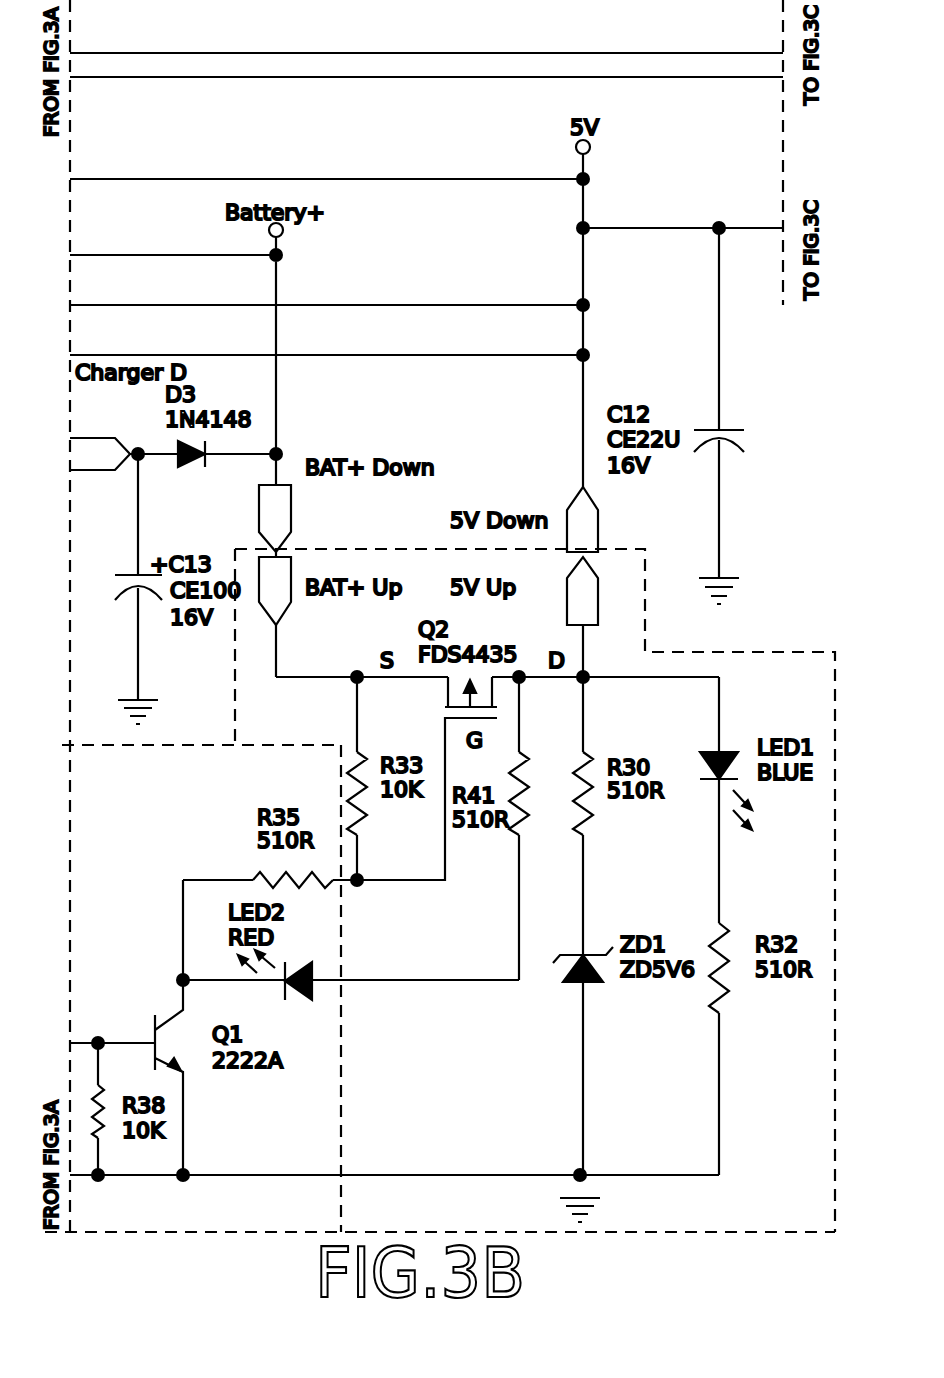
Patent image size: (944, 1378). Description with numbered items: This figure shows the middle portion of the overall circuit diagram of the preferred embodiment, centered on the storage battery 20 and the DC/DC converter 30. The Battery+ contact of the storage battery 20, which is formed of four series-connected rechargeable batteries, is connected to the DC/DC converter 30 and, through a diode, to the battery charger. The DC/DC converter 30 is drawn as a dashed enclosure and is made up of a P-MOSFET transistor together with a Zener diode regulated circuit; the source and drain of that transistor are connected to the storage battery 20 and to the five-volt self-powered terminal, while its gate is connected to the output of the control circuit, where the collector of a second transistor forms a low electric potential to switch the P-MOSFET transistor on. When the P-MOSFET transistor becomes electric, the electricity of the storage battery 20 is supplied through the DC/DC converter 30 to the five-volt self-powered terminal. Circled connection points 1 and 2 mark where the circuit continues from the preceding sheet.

The storage battery 20 is at (330, 230).
The DC/DC converter 30 is at (750, 665).
The circuit connection node 1 from FIG. 3A 1 is at (52, 745).
The circuit connection node 2 from FIG. 3A 2 is at (45, 1231).